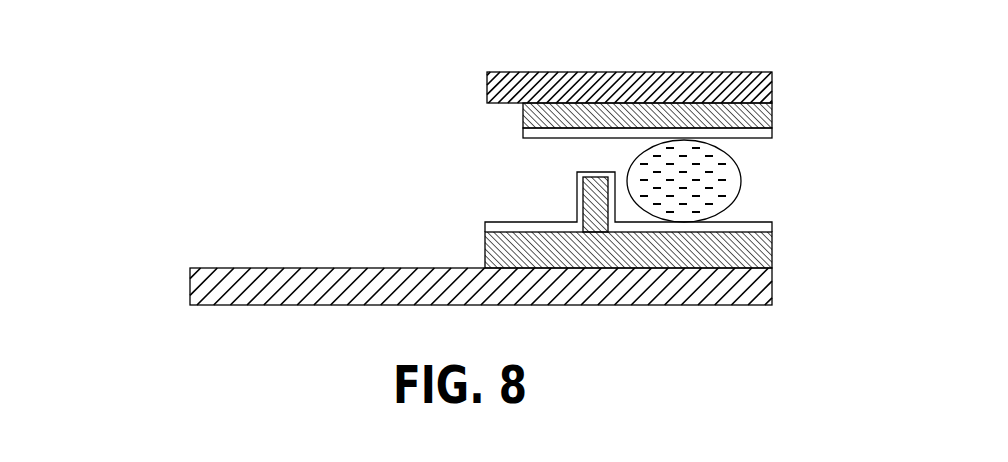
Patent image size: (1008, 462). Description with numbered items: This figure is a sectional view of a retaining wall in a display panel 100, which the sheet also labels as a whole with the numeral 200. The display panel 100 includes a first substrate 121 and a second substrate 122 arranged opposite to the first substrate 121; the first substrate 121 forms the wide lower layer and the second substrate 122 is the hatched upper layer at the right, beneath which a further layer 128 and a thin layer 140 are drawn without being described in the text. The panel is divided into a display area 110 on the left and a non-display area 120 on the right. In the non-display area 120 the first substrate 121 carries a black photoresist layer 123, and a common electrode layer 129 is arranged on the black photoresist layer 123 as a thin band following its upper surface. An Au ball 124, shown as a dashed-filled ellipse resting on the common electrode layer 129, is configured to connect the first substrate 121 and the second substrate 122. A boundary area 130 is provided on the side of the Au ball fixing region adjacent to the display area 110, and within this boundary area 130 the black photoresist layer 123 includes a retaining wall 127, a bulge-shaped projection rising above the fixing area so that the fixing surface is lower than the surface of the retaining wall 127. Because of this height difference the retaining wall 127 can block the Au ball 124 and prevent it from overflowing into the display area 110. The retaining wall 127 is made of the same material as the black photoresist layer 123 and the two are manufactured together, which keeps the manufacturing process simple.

The display device 200 is at (464, 173).
The display panel 100 is at (192, 83).
The display area 110 is at (492, 72).
The non-display area 120 is at (492, 72).
The first substrate 121 is at (772, 303).
The second substrate 122 is at (772, 86).
The black photoresist layer 123 is at (772, 238).
The Au ball 124 is at (738, 190).
The retaining wall 127 is at (600, 212).
The intermediate layer 128 is at (772, 118).
The common electrode layer 129 is at (772, 228).
The boundary area 130 is at (487, 172).
The thin film layer 140 is at (757, 140).